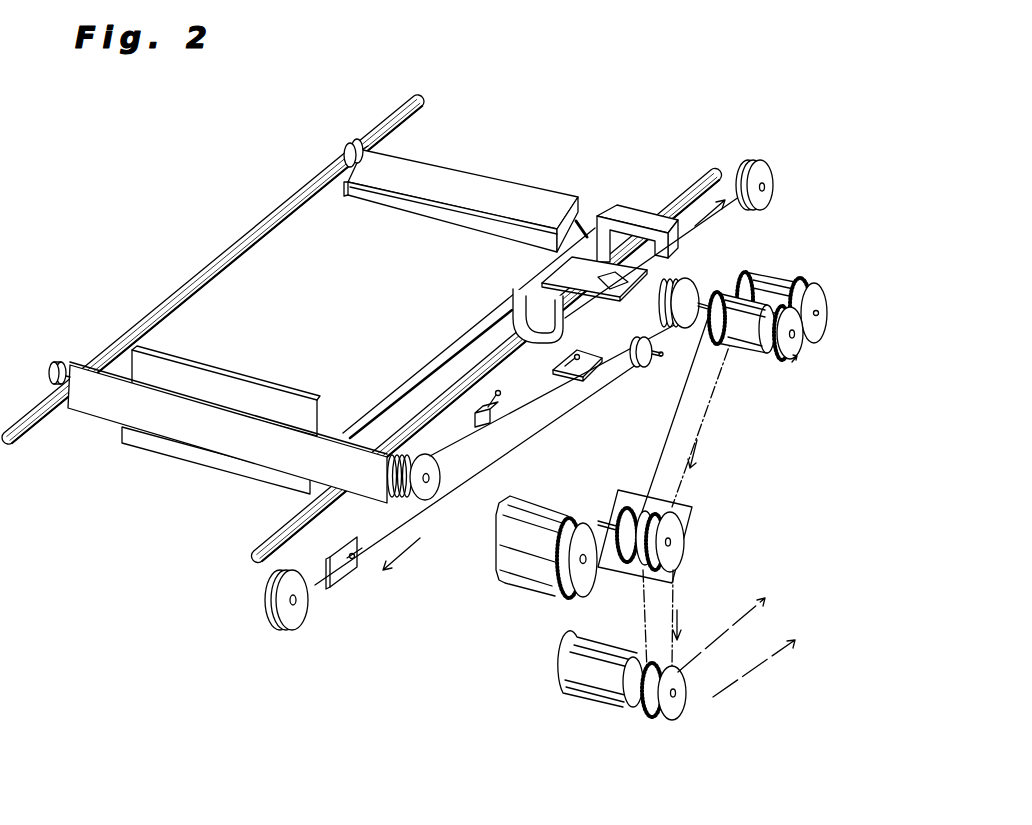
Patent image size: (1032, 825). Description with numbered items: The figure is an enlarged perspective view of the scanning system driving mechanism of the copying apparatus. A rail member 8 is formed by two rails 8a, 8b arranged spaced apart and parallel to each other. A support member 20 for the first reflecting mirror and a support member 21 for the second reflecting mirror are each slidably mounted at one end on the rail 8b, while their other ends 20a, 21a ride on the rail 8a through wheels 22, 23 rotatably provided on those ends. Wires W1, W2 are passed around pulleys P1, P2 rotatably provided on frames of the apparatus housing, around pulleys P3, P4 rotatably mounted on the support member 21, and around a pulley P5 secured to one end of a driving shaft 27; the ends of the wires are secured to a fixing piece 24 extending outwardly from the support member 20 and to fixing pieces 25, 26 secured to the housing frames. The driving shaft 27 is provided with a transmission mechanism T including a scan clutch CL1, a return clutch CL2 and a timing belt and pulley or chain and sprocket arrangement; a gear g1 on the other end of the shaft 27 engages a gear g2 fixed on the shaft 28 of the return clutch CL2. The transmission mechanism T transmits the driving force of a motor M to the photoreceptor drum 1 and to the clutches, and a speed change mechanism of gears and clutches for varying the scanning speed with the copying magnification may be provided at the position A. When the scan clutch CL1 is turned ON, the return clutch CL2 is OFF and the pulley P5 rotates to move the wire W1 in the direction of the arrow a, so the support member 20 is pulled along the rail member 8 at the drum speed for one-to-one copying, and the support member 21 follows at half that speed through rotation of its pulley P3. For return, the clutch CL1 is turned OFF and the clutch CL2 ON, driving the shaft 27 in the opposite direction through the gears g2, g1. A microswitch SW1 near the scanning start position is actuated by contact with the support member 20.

The rail member 8 is at (362, 329).
The rail 8a is at (283, 208).
The rail 8b is at (282, 528).
The support member 20 is at (640, 216).
The end of support member 20a is at (383, 153).
The support member 21 is at (105, 412).
The end of support member 21a is at (80, 366).
The wheel 22 is at (346, 151).
The wheel 23 is at (57, 362).
The fixing piece 24 is at (578, 268).
The fixing piece 25 is at (585, 370).
The fixing piece 26 is at (342, 576).
The driving shaft 27 is at (654, 352).
The shaft 28 is at (819, 318).
The pulley P1 is at (290, 631).
The pulley P2 is at (768, 178).
The pulley P3 is at (398, 462).
The pulley P4 is at (416, 456).
The pulley P5 is at (691, 298).
The wire W1 is at (370, 568).
The wire W2 is at (511, 413).
The switch SW1 is at (496, 405).
The scan clutch CL1 is at (745, 355).
The return clutch CL2 is at (785, 283).
The gear g1 is at (790, 360).
The gear g2 is at (828, 298).
The transmission mechanism T is at (710, 426).
The position for speed change mechanism A is at (703, 540).
The photoreceptor drum 1 is at (507, 583).
The motor M is at (575, 700).
The arrow a is at (557, 385).